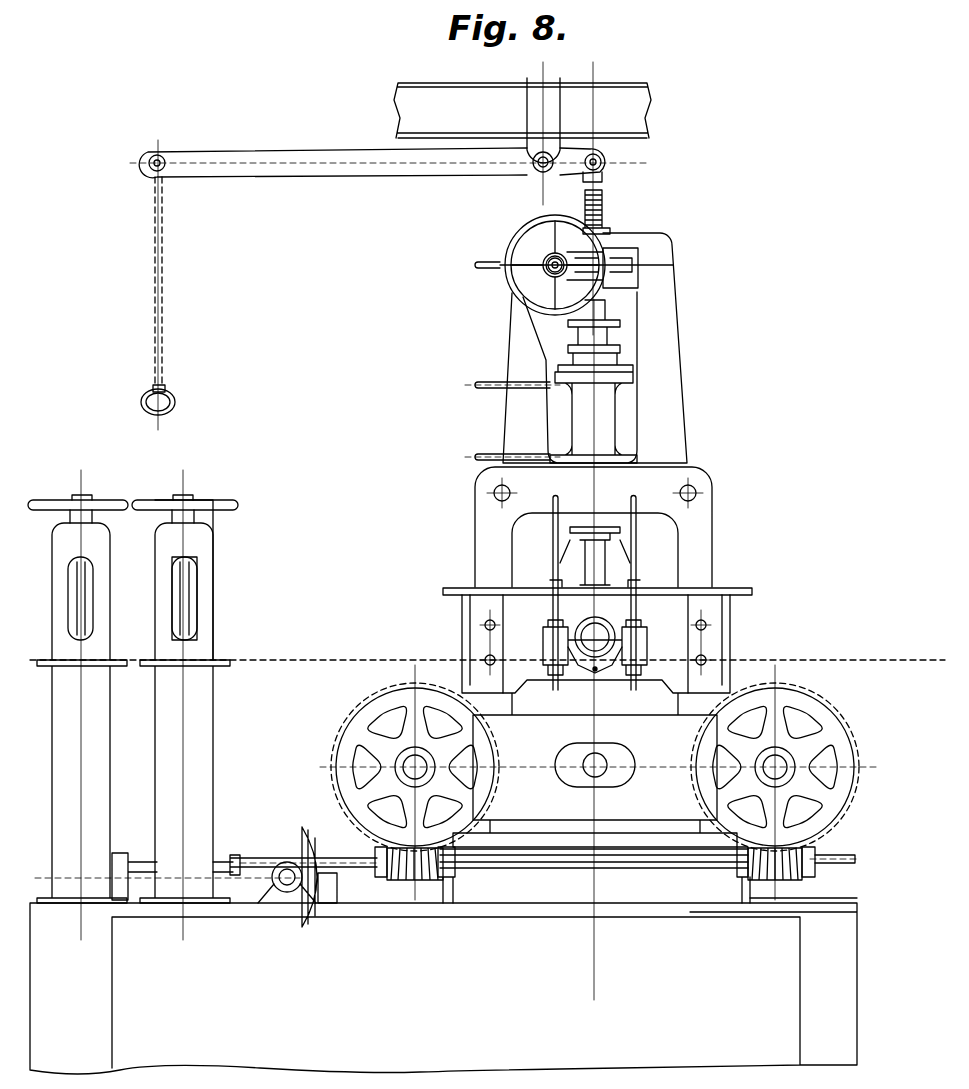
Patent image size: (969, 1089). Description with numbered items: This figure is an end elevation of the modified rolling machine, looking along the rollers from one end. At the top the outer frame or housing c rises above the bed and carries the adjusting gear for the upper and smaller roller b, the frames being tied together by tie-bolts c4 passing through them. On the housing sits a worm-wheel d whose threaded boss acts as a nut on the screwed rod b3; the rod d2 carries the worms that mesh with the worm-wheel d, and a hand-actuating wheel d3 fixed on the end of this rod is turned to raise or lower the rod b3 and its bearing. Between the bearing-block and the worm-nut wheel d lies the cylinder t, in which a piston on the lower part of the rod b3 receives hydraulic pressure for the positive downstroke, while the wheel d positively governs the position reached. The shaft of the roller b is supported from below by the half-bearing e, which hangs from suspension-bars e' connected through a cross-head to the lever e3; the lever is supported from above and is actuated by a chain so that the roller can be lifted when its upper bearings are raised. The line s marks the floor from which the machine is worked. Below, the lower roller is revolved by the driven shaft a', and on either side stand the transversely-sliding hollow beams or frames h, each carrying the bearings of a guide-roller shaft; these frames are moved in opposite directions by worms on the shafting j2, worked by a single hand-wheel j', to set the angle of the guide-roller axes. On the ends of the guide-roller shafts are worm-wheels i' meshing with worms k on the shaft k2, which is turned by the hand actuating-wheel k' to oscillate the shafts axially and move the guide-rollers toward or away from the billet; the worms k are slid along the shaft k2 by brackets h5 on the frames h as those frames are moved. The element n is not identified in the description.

The lever e3 is at (344, 160).
The screwed rod b3 is at (603, 206).
The hand-actuating wheel d3 is at (519, 252).
The worm-wheel d is at (626, 262).
The rod d2 is at (545, 271).
The outer frame or housing c is at (512, 341).
The cylinder t is at (593, 381).
The tie-bolt c4 is at (494, 493).
The suspension-bar e' is at (593, 593).
The hand-wheel j' is at (78, 490).
The hand actuating-wheel k' is at (185, 492).
The shafting j2 is at (83, 596).
The shaft k2 is at (185, 596).
The bracket n is at (596, 644).
The upper roller b is at (595, 645).
The half-bearing e is at (606, 647).
The floor line s is at (487, 649).
The worm-wheel i' is at (595, 782).
The transversely-sliding hollow beam or frame h is at (595, 763).
The driven shaft a' is at (601, 755).
The bracket h5 is at (381, 877).
The worm k is at (592, 895).